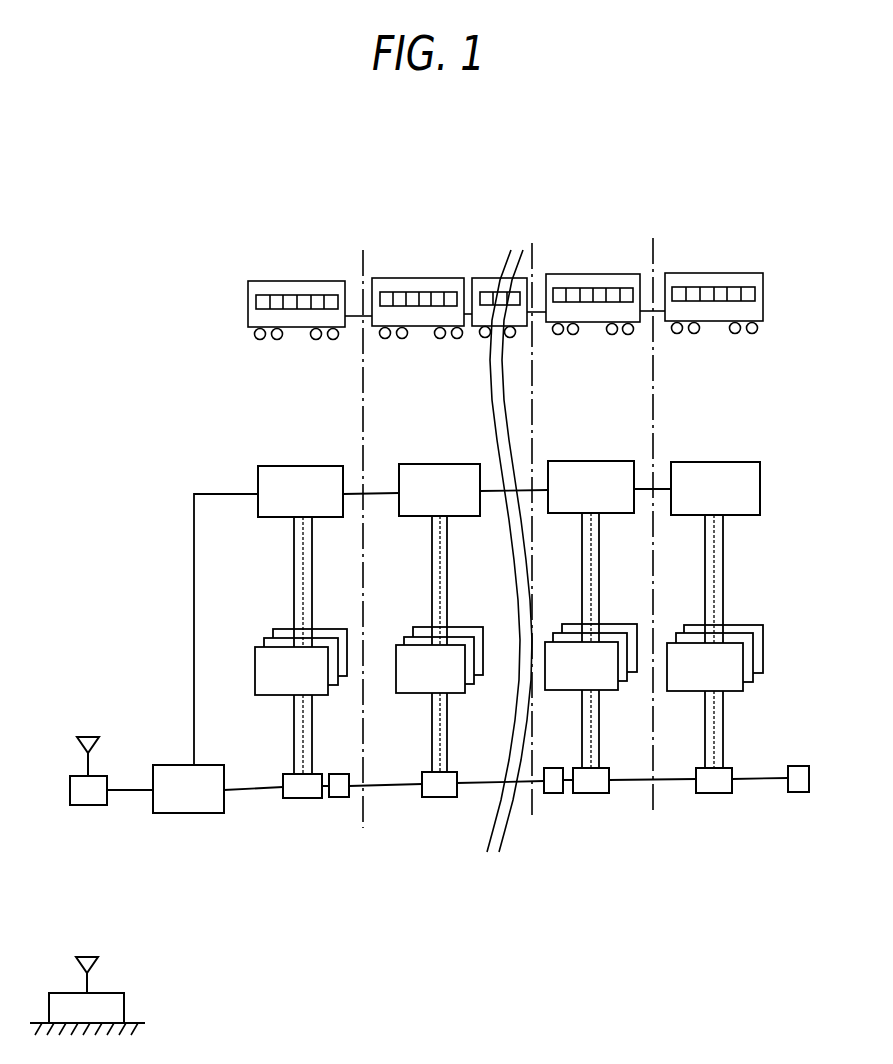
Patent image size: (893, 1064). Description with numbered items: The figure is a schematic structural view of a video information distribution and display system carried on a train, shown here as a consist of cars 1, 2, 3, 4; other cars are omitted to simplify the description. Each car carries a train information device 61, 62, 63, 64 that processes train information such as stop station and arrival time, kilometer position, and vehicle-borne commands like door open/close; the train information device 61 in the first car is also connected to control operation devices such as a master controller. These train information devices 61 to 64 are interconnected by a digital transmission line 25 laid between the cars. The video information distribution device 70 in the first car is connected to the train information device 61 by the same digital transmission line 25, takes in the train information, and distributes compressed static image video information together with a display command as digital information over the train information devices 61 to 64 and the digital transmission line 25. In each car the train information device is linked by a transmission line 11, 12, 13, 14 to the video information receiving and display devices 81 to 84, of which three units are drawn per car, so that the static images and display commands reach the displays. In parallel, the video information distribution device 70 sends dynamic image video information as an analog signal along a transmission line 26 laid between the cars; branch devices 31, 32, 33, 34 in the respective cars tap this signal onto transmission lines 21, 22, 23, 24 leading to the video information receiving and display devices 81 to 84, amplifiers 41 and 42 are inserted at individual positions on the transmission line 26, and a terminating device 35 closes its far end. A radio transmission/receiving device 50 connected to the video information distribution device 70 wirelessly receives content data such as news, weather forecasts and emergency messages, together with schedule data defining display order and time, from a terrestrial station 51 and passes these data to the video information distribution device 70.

The car 1 is at (296, 281).
The car 2 is at (417, 278).
The car 3 is at (587, 274).
The car 4 is at (718, 273).
The transmission line 11 is at (293, 582).
The transmission line 12 is at (431, 602).
The transmission line 13 is at (582, 600).
The transmission line 14 is at (725, 598).
The transmission line 21 is at (293, 752).
The transmission line 22 is at (431, 753).
The transmission line 23 is at (582, 757).
The transmission line 24 is at (725, 757).
The digital transmission line 25 is at (208, 494).
The transmission line 26 is at (232, 790).
The branch device 31 is at (300, 798).
The branch device 32 is at (435, 797).
The branch device 33 is at (597, 793).
The branch device 34 is at (710, 793).
The terminating device 35 is at (800, 792).
The amplifier 41 is at (340, 797).
The amplifier 42 is at (550, 793).
The radio transmission/receiving device 50 is at (87, 805).
The terrestrial station 51 is at (125, 1010).
The train information device 61 is at (295, 466).
The train information device 62 is at (437, 464).
The train information device 63 is at (584, 461).
The train information device 64 is at (717, 462).
The video information distribution device 70 is at (188, 813).
The video information receiving and display device 81 is at (318, 629).
The video information receiving and display device 84 is at (763, 638).